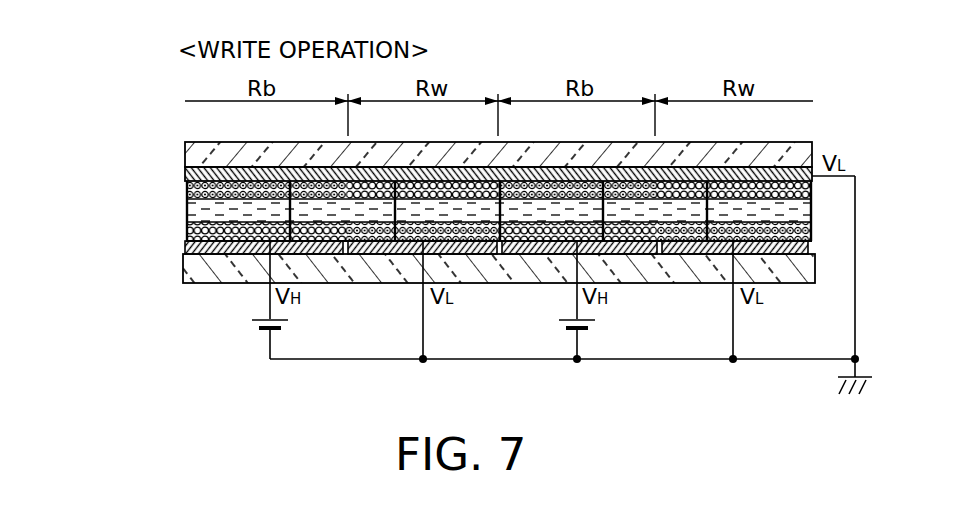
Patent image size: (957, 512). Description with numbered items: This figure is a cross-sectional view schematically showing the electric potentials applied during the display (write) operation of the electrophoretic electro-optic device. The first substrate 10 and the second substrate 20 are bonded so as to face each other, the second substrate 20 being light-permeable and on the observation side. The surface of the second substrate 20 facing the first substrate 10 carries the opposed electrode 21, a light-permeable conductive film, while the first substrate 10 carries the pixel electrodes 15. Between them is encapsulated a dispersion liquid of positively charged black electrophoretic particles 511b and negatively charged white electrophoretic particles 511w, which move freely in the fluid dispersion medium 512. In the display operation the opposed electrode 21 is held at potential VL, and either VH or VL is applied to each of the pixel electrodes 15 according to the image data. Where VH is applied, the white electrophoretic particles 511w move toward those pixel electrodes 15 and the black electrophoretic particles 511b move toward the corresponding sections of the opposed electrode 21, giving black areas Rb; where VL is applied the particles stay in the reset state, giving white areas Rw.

The first substrate 10 is at (188, 262).
The pixel electrodes 15 is at (188, 249).
The second substrate 20 is at (188, 153).
The opposed electrode 21 is at (188, 176).
The black electrophoretic particles 511b is at (188, 182).
The dispersion medium 512 is at (188, 204).
The white electrophoretic particles 511w is at (188, 227).